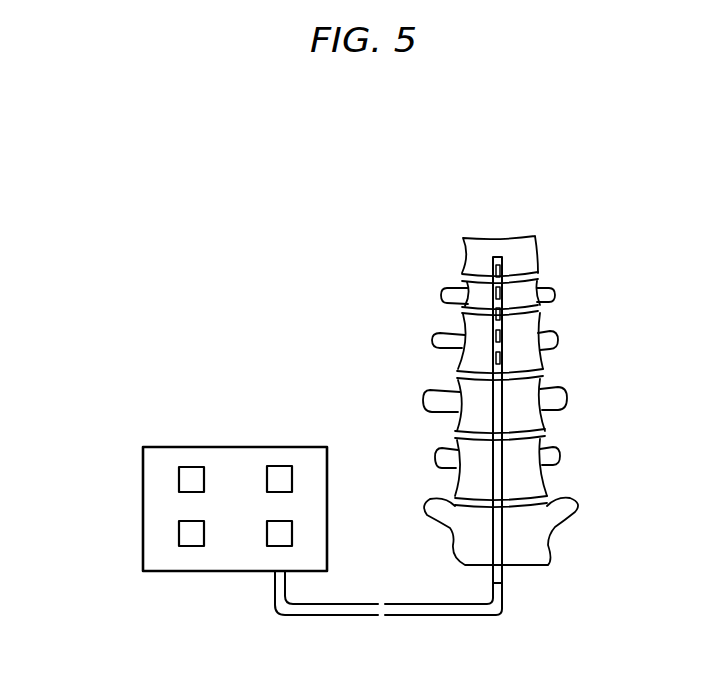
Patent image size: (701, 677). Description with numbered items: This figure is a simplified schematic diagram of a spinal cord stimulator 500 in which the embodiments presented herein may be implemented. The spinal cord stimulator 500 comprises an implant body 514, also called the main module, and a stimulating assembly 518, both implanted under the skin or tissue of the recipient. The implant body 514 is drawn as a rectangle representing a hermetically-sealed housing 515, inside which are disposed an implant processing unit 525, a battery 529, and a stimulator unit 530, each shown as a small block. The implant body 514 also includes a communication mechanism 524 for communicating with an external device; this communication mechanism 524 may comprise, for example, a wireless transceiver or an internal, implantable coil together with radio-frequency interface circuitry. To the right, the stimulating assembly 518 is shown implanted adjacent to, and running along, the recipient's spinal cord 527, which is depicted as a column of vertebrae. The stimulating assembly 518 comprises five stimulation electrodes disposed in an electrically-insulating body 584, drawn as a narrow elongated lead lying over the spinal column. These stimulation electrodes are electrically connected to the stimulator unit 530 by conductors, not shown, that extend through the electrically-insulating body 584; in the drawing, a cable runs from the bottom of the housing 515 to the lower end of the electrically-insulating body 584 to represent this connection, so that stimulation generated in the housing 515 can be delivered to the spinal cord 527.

The spinal cord stimulator 500 is at (631, 118).
The stimulating assembly 518 is at (495, 206).
The spinal cord 527 is at (534, 237).
The electrically-insulating body 584 is at (498, 383).
The implant body 514 is at (262, 359).
The housing 515 is at (227, 446).
The battery 529 is at (179, 480).
The implant processing unit 525 is at (179, 533).
The communication mechanism 524 is at (292, 466).
The stimulator unit 530 is at (293, 533).